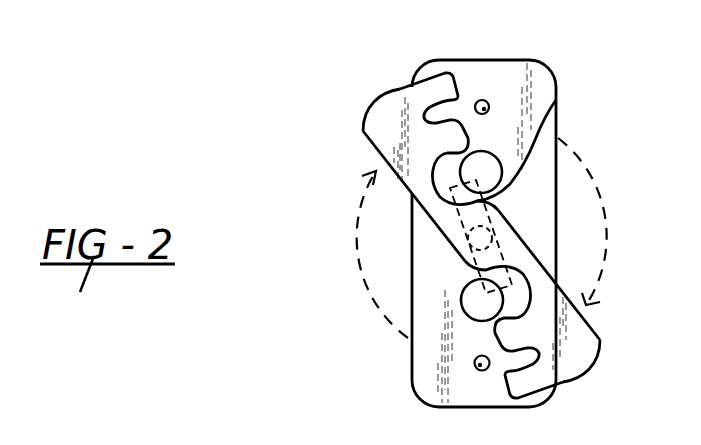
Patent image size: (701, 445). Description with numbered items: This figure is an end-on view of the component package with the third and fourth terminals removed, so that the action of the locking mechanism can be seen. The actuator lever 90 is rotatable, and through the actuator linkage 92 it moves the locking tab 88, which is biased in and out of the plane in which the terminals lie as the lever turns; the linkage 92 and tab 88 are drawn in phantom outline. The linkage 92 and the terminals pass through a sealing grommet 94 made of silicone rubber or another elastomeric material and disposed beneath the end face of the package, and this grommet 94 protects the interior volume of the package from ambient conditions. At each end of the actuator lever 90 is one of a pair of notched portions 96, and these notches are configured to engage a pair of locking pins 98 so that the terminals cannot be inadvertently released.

The locking tab 88 is at (557, 99).
The actuator lever 90 is at (363, 130).
The actuator linkage 92 is at (497, 248).
The sealing grommet 94 is at (417, 353).
The notched portions 96 is at (423, 117).
The locking pins 98 is at (482, 100).